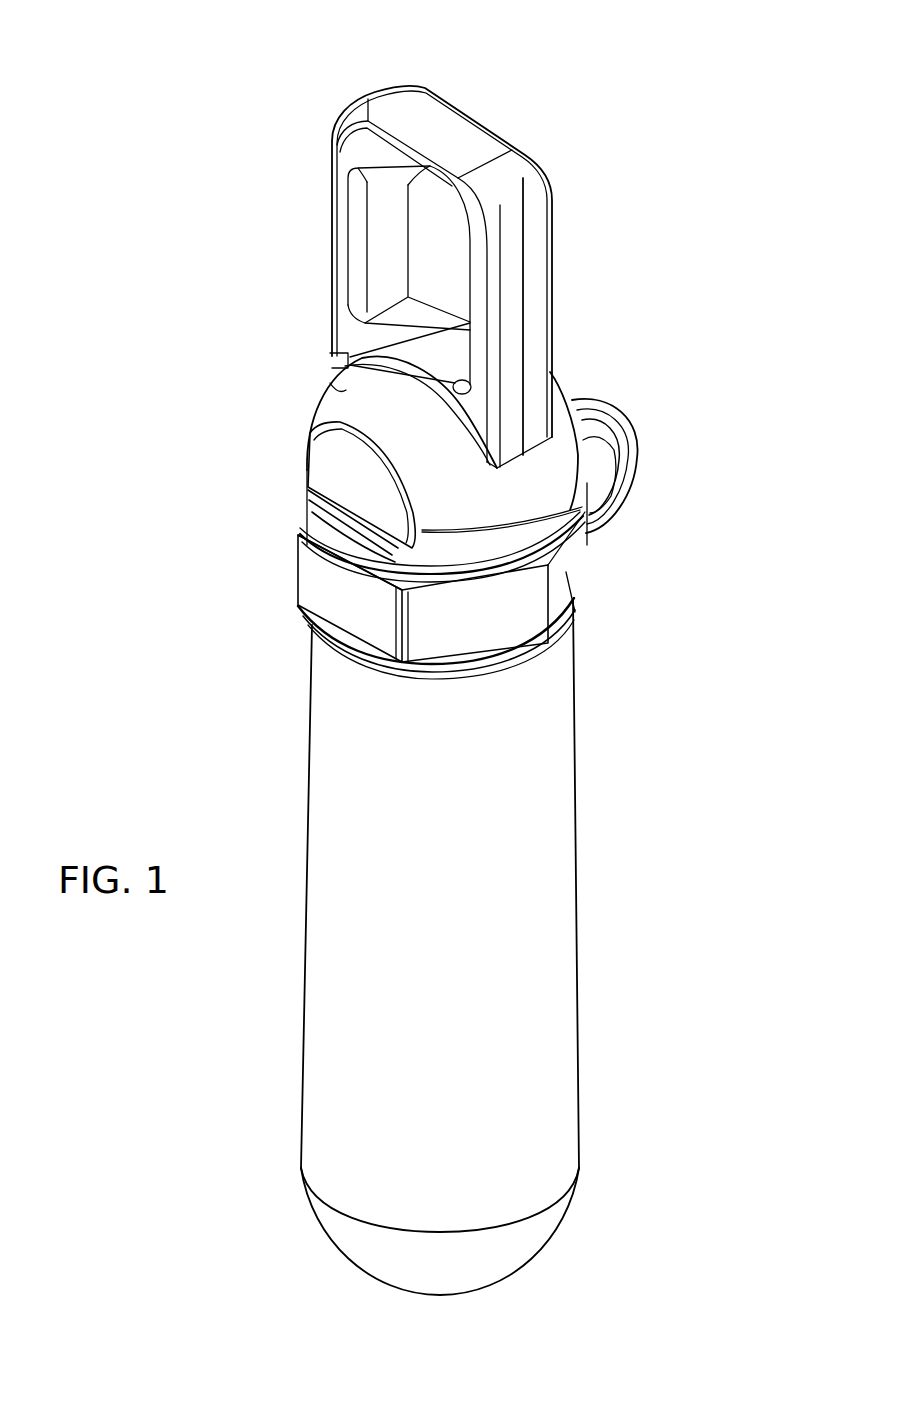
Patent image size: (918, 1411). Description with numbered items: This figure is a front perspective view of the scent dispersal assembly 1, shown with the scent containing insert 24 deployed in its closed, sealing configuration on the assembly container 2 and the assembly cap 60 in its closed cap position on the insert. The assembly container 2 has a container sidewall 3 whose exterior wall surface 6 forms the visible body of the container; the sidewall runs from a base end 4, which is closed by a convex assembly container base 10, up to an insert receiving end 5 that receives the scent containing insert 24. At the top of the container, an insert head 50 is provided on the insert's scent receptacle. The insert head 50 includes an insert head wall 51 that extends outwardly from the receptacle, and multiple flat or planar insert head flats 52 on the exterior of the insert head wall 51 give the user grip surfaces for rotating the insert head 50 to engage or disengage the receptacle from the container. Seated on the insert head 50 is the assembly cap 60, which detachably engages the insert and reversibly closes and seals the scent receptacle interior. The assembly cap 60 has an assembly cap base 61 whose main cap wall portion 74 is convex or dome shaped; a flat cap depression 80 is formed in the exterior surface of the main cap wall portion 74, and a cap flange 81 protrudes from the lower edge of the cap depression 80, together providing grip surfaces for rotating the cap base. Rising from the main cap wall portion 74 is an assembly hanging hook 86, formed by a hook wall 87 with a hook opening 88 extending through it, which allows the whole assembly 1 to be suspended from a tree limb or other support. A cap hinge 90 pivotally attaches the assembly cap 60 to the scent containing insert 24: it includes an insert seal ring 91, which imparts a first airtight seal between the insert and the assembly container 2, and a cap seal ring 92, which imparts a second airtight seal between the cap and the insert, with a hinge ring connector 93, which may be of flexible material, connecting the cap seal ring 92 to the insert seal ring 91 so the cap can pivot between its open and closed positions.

The scent dispersal assembly 1 is at (210, 88).
The assembly container 2 is at (310, 765).
The container sidewall 3 is at (535, 895).
The base end 4 is at (378, 1226).
The insert receiving end 5 is at (513, 660).
The exterior wall surface 6 is at (438, 891).
The assembly container base 10 is at (490, 1260).
The scent containing insert 24 is at (270, 565).
The insert head 50 is at (293, 610).
The insert head wall 51 is at (560, 555).
The insert head flats 52 is at (375, 623).
The assembly cap 60 is at (300, 290).
The assembly cap base 61 is at (560, 380).
The main cap wall portion 74 is at (328, 382).
The cap depression 80 is at (345, 468).
The cap flange 81 is at (312, 505).
The assembly hanging hook 86 is at (470, 100).
The hook wall 87 is at (548, 250).
The hook opening 88 is at (460, 268).
The cap hinge 90 is at (650, 420).
The insert seal ring 91 is at (466, 665).
The cap seal ring 92 is at (476, 560).
The hinge ring connector 93 is at (635, 470).